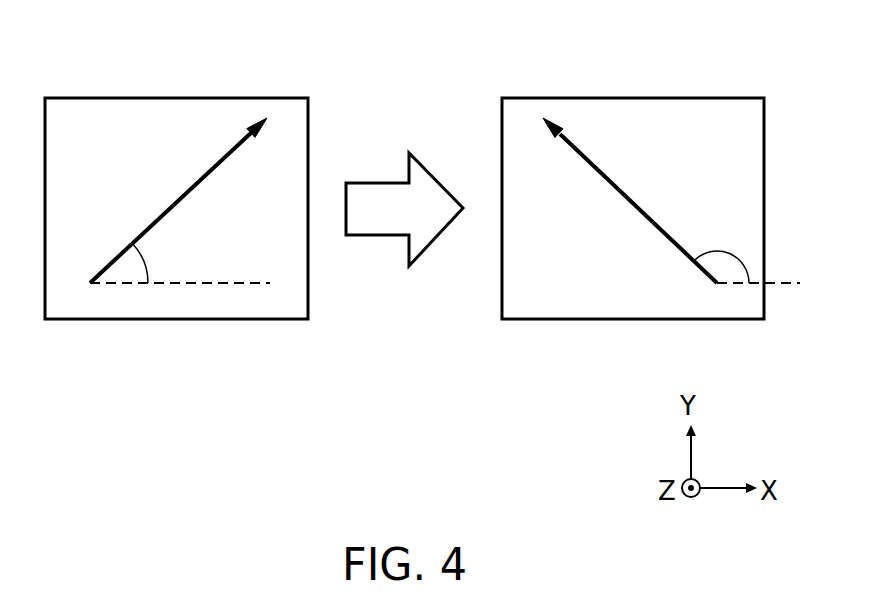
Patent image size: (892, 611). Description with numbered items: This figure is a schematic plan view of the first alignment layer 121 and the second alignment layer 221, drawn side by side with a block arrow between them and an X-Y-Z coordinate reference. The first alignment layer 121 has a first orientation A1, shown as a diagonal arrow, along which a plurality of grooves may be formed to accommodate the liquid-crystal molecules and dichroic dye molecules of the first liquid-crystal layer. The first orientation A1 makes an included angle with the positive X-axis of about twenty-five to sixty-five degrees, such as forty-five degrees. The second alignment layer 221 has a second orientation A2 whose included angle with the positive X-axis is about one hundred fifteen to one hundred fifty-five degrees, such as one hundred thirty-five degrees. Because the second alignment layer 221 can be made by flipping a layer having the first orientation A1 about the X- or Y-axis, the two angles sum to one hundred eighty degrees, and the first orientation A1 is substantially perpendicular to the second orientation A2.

The first alignment layer 121 is at (46, 98).
The second alignment layer 221 is at (503, 98).
The first orientation A1 is at (170, 205).
The second orientation A2 is at (638, 205).